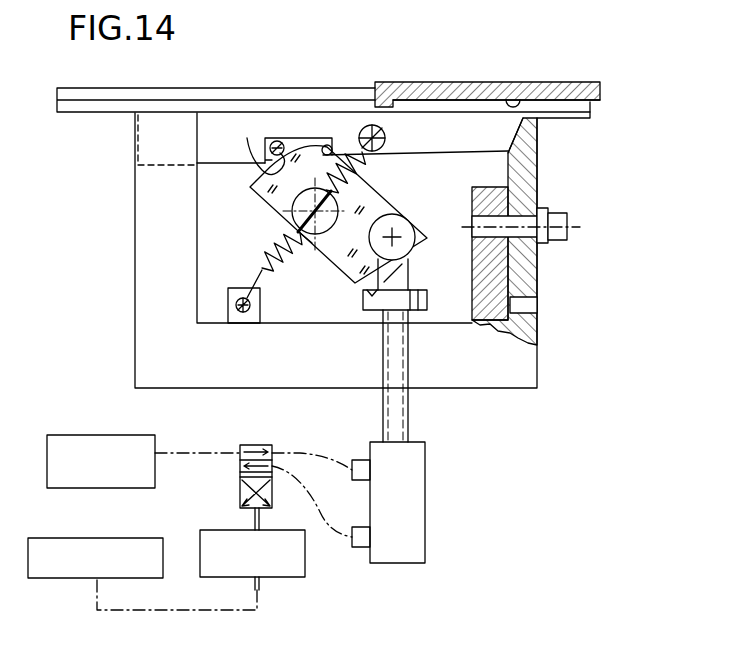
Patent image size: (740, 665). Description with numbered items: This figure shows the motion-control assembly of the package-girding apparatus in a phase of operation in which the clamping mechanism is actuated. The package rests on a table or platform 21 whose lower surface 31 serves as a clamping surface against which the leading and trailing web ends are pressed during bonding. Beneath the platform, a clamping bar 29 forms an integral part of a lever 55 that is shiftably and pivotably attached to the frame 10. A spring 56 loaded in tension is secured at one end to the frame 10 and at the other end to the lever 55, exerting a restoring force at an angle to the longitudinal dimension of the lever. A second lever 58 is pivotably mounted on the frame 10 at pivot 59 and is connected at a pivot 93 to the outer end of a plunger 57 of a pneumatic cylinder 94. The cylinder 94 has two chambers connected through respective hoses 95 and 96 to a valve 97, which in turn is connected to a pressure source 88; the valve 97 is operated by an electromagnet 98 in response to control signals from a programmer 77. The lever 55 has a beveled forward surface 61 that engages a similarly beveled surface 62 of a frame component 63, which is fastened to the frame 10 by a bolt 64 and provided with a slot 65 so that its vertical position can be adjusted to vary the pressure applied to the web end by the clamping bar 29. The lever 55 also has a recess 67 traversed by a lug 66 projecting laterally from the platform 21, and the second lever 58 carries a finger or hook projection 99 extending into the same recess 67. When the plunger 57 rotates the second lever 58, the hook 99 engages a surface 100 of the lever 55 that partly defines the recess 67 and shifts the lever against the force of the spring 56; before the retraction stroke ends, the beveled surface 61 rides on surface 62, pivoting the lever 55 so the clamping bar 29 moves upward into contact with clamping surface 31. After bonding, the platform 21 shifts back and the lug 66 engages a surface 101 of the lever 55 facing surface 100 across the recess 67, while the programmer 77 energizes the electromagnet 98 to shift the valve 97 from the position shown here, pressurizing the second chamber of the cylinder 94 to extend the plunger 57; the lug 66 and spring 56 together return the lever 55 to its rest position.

The frame 10 is at (262, 388).
The platform 21 is at (468, 92).
The clamping bar 29 is at (592, 107).
The lower surface 31 is at (522, 84).
The lever 55 is at (220, 158).
The spring 56 is at (283, 277).
The plunger 57 is at (400, 425).
The second lever 58 is at (340, 258).
The pivot 59 is at (293, 210).
The beveled forward surface 61 is at (538, 146).
The beveled surface 62 is at (512, 160).
The frame component 63 is at (520, 278).
The bolt 64 is at (570, 220).
The slot 65 is at (536, 200).
The lug 66 is at (268, 138).
The recess 67 is at (303, 140).
The programmer 77 is at (60, 540).
The pressure source 88 is at (84, 436).
The pivot 93 is at (397, 228).
The pneumatic cylinder 94 is at (417, 489).
The hose 95 is at (326, 451).
The hose 96 is at (343, 520).
The valve 97 is at (242, 478).
The electromagnet 98 is at (300, 562).
The hook projection 99 is at (333, 150).
The surface 100 is at (348, 140).
The surface 101 is at (251, 146).